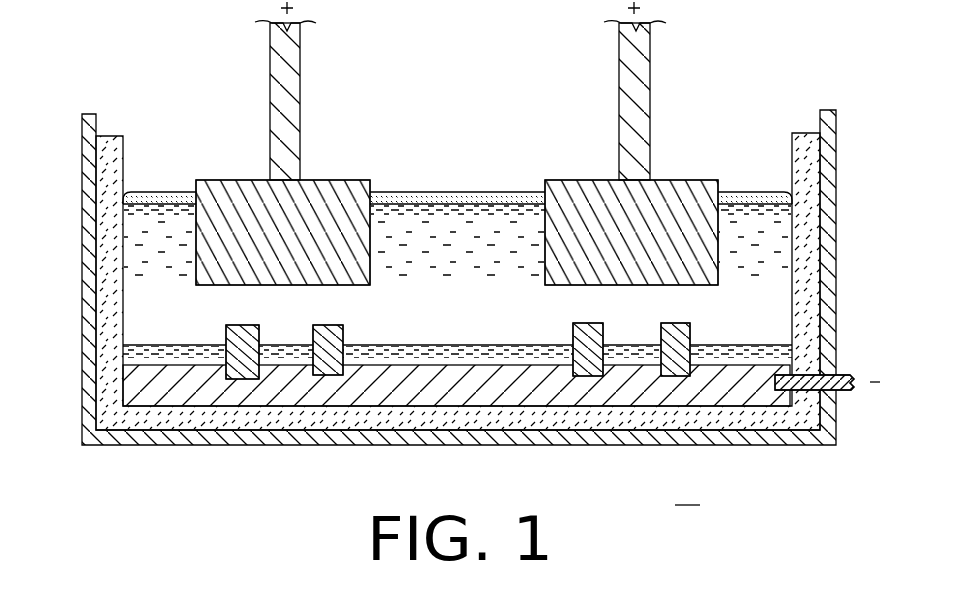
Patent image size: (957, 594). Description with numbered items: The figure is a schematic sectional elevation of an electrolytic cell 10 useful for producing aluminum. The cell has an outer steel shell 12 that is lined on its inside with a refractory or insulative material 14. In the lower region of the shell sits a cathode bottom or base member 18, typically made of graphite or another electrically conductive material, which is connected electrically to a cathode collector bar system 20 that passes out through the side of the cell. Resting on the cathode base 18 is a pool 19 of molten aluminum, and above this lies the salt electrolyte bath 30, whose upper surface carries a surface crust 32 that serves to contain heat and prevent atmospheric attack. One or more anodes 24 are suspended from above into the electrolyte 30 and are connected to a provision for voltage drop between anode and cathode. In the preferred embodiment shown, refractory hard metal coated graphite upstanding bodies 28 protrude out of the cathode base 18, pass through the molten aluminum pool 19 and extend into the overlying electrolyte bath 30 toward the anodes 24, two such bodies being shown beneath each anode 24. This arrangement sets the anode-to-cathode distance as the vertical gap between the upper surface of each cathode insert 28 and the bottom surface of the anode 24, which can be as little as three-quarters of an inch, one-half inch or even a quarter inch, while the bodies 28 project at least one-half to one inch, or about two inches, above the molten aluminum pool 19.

The electrolytic cell apparatus 10 is at (465, 254).
The outer steel shell 12 is at (820, 114).
The refractory or insulative material 14 is at (806, 245).
The cathode bottom or base member 18 is at (503, 388).
The pool of molten aluminum 19 is at (130, 357).
The cathode collector bar system 20 is at (845, 375).
The anode 24 is at (545, 180).
The upstanding cathode body 28 is at (343, 330).
The electrolyte bath 30 is at (137, 242).
The surface crust 32 is at (170, 192).